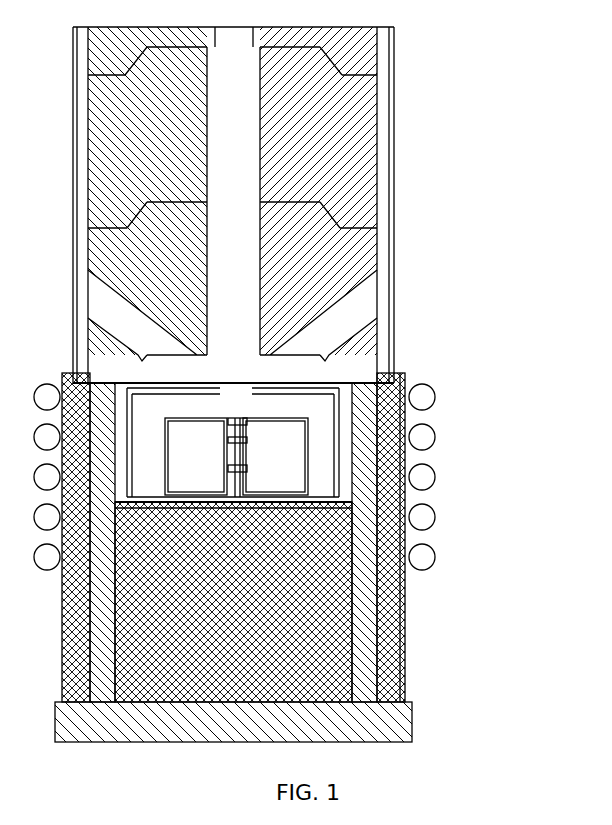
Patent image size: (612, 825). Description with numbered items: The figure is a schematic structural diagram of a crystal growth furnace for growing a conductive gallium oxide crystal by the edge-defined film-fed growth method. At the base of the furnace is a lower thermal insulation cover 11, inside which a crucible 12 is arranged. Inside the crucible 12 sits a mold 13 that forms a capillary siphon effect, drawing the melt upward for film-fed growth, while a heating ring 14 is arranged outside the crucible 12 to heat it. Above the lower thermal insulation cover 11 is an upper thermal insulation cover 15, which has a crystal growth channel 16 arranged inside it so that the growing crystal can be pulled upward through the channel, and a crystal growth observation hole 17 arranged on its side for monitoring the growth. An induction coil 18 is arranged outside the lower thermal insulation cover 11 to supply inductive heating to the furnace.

The lower thermal insulation cover 11 is at (367, 632).
The crucible 12 is at (308, 478).
The mold 13 is at (237, 452).
The heating ring 14 is at (332, 435).
The upper thermal insulation cover 15 is at (313, 172).
The crystal growth channel 16 is at (245, 277).
The crystal growth observation hole 17 is at (367, 303).
The induction coil 18 is at (435, 437).